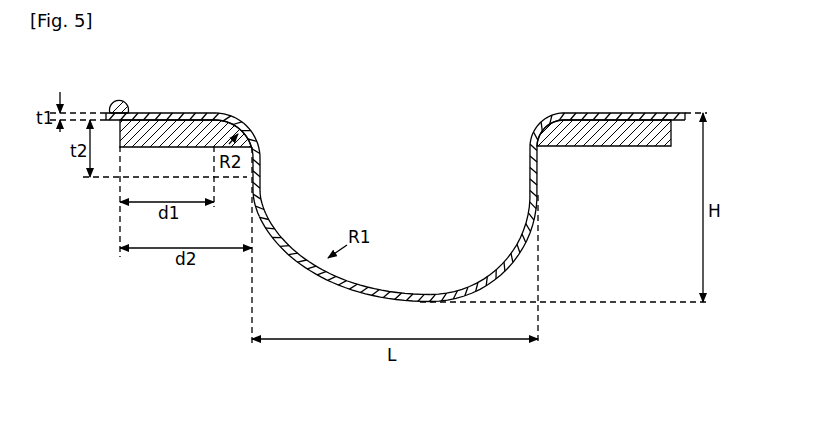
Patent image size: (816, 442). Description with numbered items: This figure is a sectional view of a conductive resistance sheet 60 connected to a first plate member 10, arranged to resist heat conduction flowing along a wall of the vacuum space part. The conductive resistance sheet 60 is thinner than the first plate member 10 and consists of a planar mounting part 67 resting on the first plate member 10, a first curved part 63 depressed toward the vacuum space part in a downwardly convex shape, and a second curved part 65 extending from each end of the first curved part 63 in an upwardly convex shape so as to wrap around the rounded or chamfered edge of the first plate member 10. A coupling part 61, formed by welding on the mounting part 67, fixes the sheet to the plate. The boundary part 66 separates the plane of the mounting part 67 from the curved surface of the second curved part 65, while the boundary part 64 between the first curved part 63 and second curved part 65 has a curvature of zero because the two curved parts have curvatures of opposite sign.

The first plate member 10 is at (177, 124).
The conductive resistance sheet 60 is at (480, 242).
The coupling part 61 is at (115, 102).
The first curved part 63 is at (275, 228).
The boundary part 64 is at (263, 170).
The second curved part 65 is at (248, 128).
The boundary part 66 is at (226, 116).
The mounting part 67 is at (197, 112).